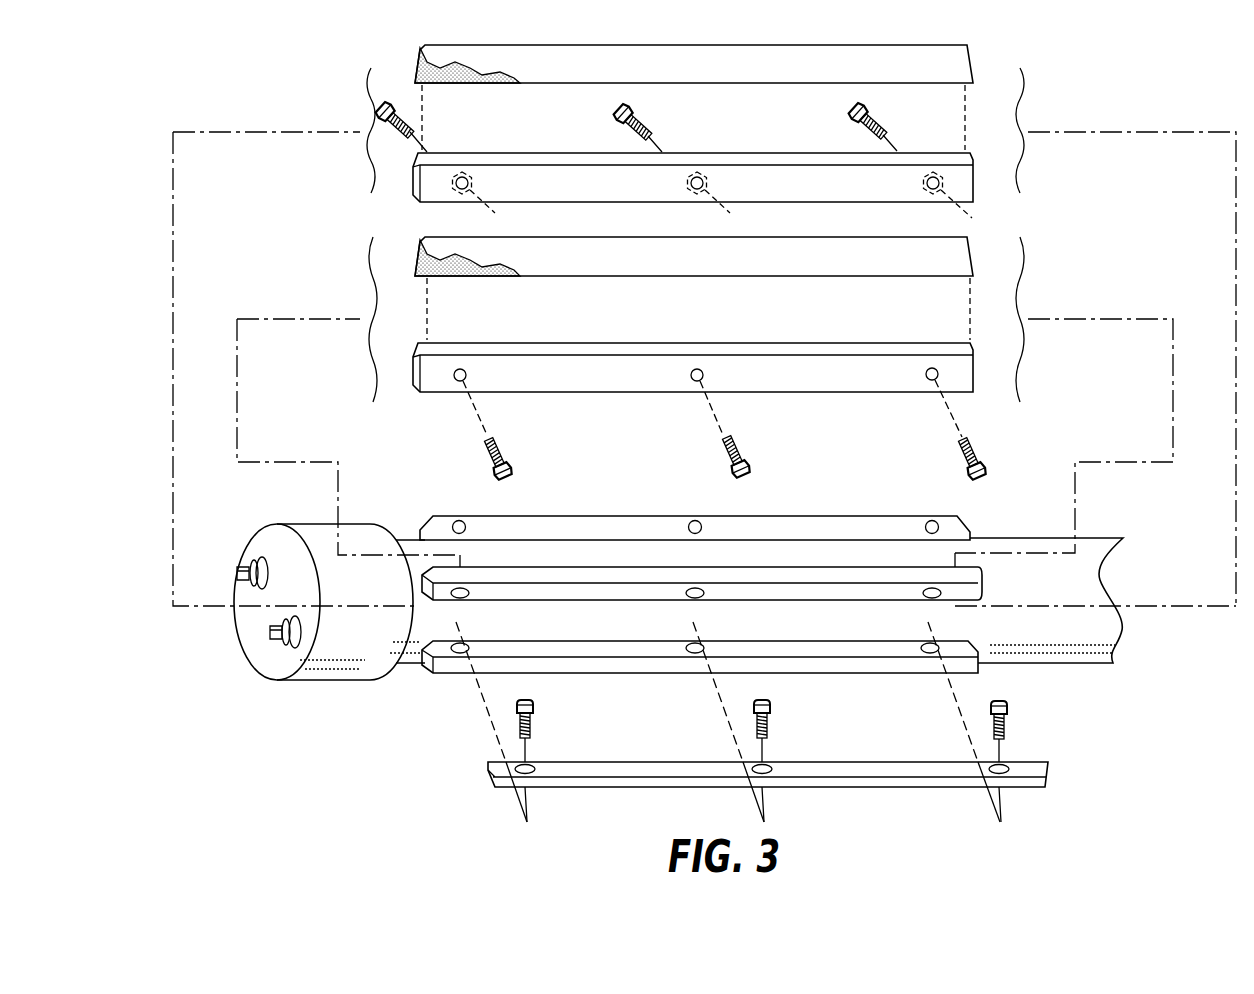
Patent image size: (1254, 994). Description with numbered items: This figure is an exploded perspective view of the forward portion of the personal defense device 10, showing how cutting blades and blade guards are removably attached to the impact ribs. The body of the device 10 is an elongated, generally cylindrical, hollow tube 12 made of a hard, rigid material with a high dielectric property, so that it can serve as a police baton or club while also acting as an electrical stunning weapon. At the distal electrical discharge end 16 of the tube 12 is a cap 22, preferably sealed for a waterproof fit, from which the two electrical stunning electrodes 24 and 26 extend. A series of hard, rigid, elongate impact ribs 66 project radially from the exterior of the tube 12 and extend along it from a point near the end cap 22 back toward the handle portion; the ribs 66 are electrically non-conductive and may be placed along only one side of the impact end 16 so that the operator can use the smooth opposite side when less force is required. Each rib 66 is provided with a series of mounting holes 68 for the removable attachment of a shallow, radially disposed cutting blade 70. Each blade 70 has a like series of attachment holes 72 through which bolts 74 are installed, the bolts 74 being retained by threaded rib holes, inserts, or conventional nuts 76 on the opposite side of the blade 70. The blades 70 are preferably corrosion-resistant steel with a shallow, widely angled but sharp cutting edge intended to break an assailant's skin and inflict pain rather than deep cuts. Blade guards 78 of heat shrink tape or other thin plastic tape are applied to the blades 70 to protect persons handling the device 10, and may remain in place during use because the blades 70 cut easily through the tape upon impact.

The personal defense device 10 is at (352, 760).
The tube 12 is at (1062, 538).
The electrical discharge end 16 is at (400, 538).
The cap 22 is at (297, 524).
The electrical stunning electrode 24 is at (242, 568).
The electrical stunning electrode 26 is at (272, 643).
The impact rib 66 is at (483, 515).
The mounting hole 68 is at (927, 535).
The cutting blade 70 is at (535, 152).
The attachment hole 72 is at (926, 183).
The bolt 74 is at (852, 115).
The nut 76 is at (685, 184).
The blade guard 78 is at (973, 62).